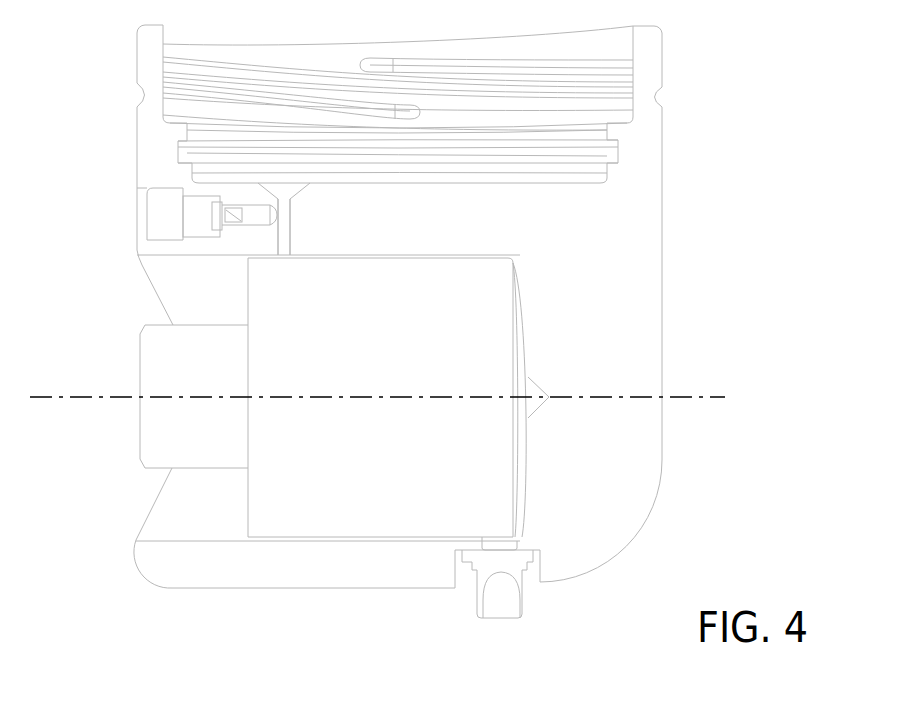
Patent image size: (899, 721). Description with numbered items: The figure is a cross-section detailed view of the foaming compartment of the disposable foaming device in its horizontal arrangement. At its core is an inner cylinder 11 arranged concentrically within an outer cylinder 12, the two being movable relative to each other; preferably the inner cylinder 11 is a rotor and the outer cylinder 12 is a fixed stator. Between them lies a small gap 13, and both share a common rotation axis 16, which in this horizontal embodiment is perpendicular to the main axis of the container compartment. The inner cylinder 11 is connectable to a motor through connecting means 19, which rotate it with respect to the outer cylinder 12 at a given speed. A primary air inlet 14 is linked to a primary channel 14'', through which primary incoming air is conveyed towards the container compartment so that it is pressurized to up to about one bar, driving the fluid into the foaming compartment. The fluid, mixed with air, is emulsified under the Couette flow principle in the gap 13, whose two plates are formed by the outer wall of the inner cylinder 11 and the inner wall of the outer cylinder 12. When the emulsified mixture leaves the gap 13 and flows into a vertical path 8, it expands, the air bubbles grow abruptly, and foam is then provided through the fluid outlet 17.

The vertical path 8 is at (497, 542).
The inner cylinder 11 is at (258, 304).
The outer cylinder 12 is at (187, 541).
The gap 13 is at (443, 255).
The primary air inlet 14 is at (157, 193).
The primary channel 14'' is at (156, 228).
The rotation axis 16 is at (687, 398).
The fluid outlet 17 is at (487, 607).
The connecting means 19 is at (153, 422).